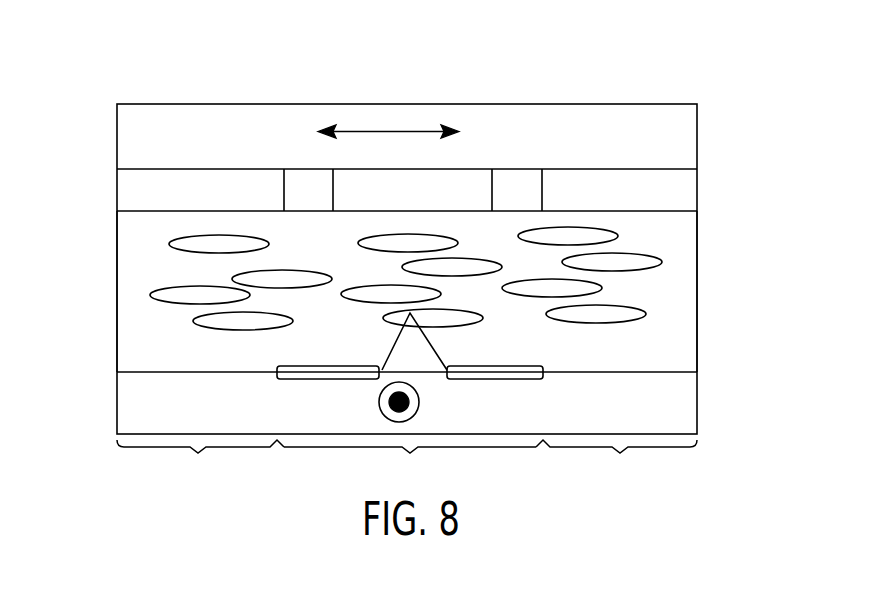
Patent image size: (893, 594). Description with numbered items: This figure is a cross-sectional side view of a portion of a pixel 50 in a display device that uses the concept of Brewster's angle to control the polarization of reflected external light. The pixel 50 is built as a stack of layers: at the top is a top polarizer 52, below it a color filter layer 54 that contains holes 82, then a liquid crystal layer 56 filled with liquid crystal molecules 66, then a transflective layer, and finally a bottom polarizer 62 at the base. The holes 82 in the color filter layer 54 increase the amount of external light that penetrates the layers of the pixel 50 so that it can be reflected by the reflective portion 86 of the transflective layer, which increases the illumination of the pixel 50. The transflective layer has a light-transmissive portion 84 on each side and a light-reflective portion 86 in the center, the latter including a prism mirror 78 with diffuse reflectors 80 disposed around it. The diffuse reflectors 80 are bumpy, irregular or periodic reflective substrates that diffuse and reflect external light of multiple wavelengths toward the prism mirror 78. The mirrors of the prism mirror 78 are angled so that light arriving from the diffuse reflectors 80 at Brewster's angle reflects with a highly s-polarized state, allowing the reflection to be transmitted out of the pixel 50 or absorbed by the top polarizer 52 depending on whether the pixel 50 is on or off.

The pixel 50 is at (178, 42).
The top polarizer 52 is at (128, 142).
The color filter layer 54 is at (687, 188).
The liquid crystal layer 56 is at (128, 292).
The bottom polarizer 62 is at (128, 412).
The liquid crystal molecules 66 is at (645, 310).
The prism mirror 78 is at (433, 352).
The diffuse reflectors 80 is at (523, 379).
The holes 82 is at (517, 185).
The light-transmissive portion 84 is at (198, 453).
The reflective portion 86 is at (410, 453).